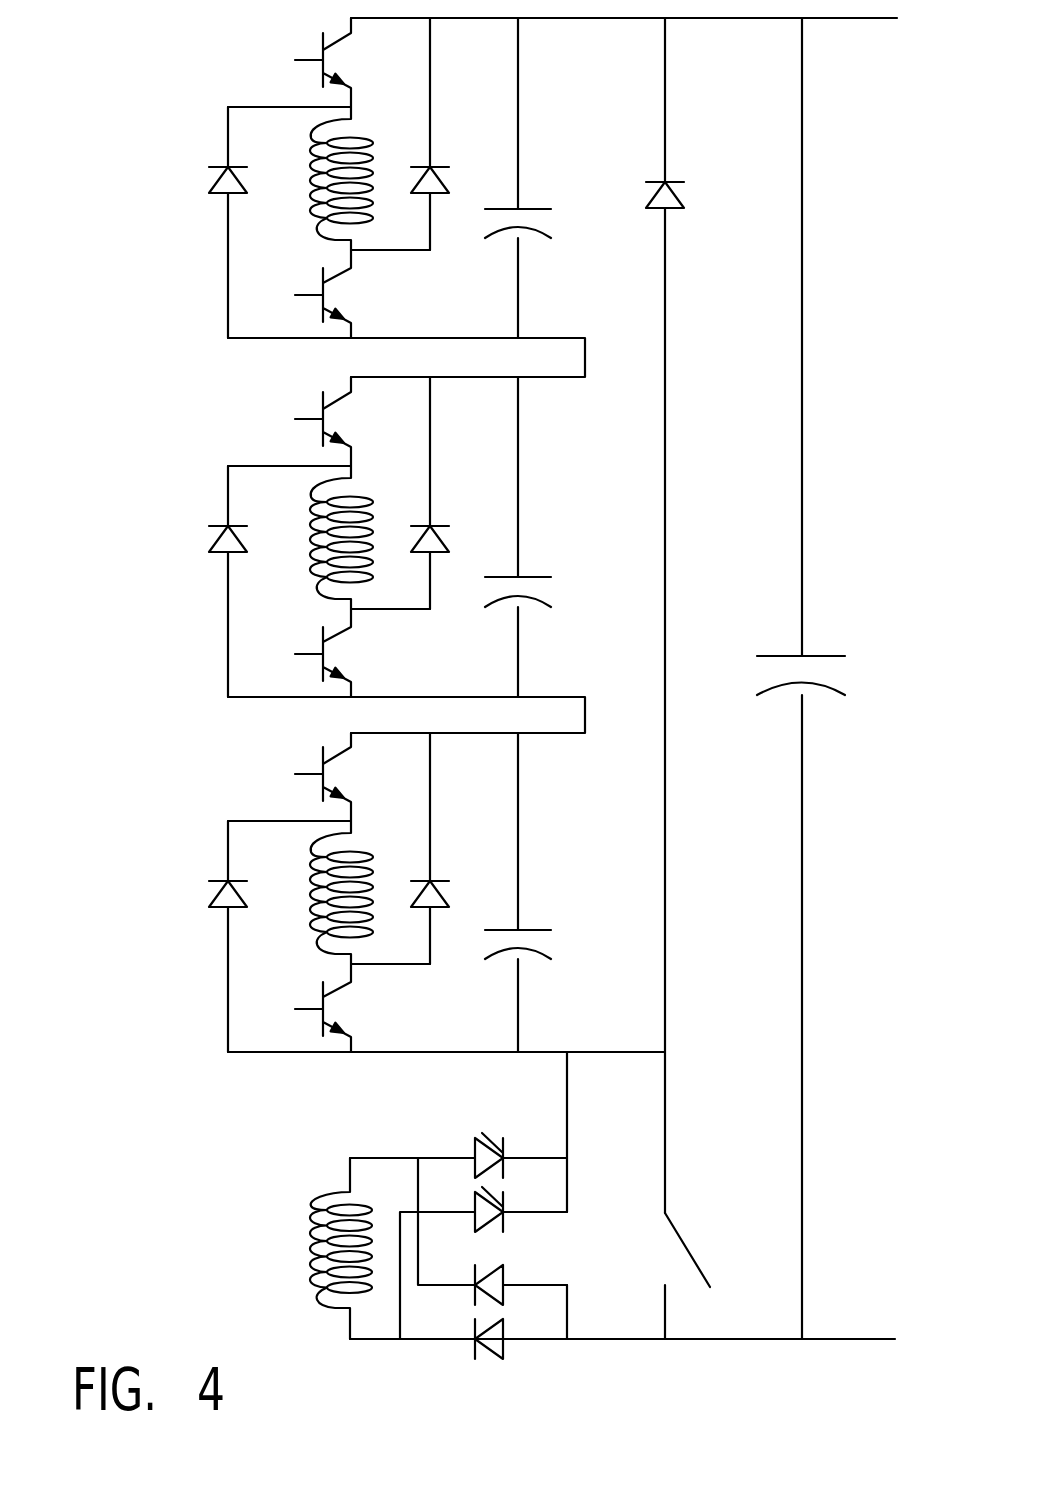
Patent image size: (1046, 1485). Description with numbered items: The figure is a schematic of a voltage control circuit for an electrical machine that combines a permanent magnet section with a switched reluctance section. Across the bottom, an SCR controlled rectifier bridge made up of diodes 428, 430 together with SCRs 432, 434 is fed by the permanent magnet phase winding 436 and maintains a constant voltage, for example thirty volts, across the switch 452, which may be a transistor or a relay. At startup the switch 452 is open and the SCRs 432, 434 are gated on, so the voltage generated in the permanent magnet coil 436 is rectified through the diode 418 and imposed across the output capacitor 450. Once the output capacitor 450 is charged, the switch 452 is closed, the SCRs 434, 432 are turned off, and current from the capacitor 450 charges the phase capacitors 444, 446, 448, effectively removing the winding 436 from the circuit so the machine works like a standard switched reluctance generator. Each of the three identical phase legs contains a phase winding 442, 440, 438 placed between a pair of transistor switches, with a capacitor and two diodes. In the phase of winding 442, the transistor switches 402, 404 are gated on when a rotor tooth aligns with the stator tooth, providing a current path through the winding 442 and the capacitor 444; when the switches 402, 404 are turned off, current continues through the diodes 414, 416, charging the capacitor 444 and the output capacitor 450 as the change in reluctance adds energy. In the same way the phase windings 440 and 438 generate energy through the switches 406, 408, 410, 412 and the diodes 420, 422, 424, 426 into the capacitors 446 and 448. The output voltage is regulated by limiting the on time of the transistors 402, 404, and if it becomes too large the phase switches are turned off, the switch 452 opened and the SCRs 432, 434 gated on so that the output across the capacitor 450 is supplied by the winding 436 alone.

The transistor switch 402 is at (337, 41).
The transistor switch 404 is at (339, 273).
The switch 406 is at (337, 400).
The switch 408 is at (341, 631).
The switch 410 is at (300, 773).
The switch 412 is at (340, 989).
The diode 414 is at (222, 165).
The diode 416 is at (443, 163).
The diode 418 is at (672, 180).
The diode 420 is at (222, 523).
The diode 422 is at (442, 522).
The diode 424 is at (222, 879).
The diode 426 is at (442, 877).
The diode 428 is at (476, 1348).
The diode 430 is at (505, 1272).
The SCR 432 is at (507, 1222).
The SCR 434 is at (480, 1152).
The permanent magnet phase winding 436 is at (330, 1190).
The phase winding 438 is at (332, 953).
The phase winding 440 is at (332, 597).
The phase winding 442 is at (332, 238).
The capacitor 444 is at (541, 208).
The capacitor 446 is at (541, 576).
The capacitor 448 is at (541, 929).
The output capacitor 450 is at (815, 652).
The switch 452 is at (684, 1245).